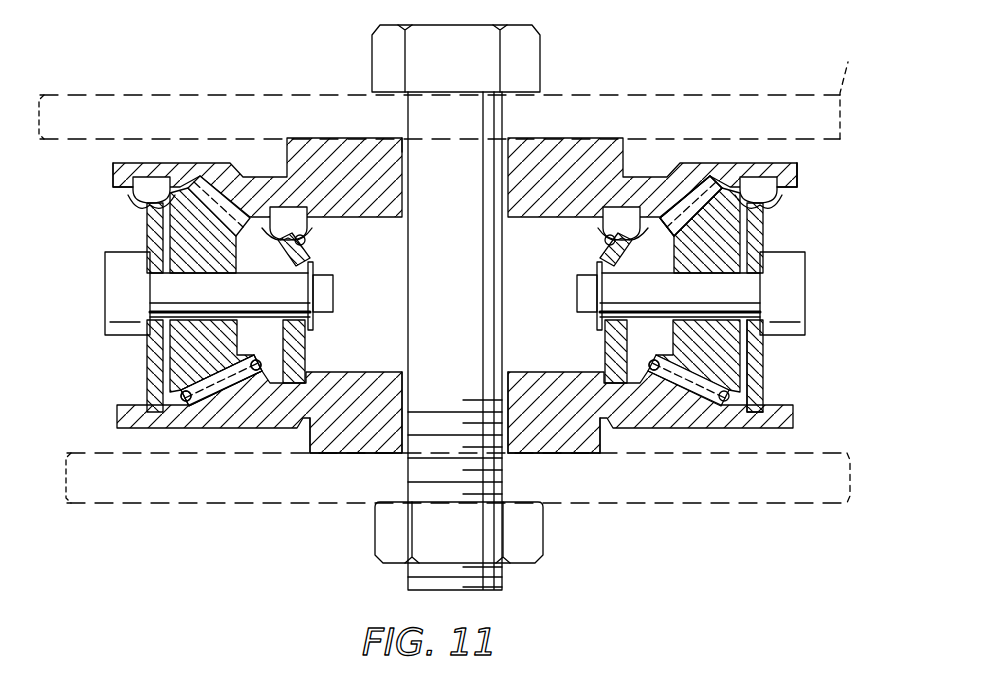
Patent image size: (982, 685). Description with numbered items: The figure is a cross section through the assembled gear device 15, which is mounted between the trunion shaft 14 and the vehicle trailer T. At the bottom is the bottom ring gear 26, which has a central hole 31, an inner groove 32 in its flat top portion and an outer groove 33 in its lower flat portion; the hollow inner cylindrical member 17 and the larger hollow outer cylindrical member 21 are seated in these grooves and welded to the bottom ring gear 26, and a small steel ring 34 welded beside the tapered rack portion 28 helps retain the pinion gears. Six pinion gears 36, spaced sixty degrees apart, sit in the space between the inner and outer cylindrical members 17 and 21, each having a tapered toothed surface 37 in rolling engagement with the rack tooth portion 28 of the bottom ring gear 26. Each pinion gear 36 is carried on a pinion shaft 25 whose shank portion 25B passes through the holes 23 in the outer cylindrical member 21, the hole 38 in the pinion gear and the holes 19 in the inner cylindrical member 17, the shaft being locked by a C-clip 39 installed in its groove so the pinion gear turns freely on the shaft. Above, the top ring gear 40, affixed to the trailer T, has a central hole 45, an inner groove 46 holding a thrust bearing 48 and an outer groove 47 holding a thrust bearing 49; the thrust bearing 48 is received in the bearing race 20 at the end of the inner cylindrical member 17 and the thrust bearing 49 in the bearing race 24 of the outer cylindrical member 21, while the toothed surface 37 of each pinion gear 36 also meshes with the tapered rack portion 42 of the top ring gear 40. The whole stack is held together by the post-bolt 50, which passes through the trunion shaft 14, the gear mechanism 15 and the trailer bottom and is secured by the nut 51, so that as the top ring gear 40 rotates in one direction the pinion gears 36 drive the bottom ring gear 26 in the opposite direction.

The trunion shaft 14 is at (108, 483).
The vehicle trailer T is at (451, 87).
The gear device 15 is at (840, 200).
The inner cylindrical member 17 is at (306, 340).
The holes 19 is at (333, 280).
The bearing race 20 is at (303, 243).
The outer cylindrical member 21 is at (763, 340).
The holes 23 is at (150, 280).
The bearing race 24 is at (140, 203).
The pinion shaft 25 is at (113, 260).
The shank portion 25B is at (292, 306).
The bottom ring gear 26 is at (588, 440).
The tapered rack portion 28 is at (221, 380).
The hole 31 is at (403, 397).
The inner groove 32 is at (302, 385).
The outer groove 33 is at (257, 370).
The steel ring 34 is at (185, 400).
The pinion gear 36 is at (203, 207).
The toothed surface 37 is at (233, 383).
The hole 38 is at (685, 268).
The C-clip 39 is at (318, 325).
The top ring gear 40 is at (310, 160).
The tapered rack portion 42 is at (691, 206).
The hole 45 is at (410, 145).
The inner groove 46 is at (310, 222).
The outer groove 47 is at (130, 182).
The thrust bearing 48 is at (287, 217).
The thrust bearing 49 is at (150, 183).
The post-bolt 50 is at (467, 284).
The nut 51 is at (540, 548).